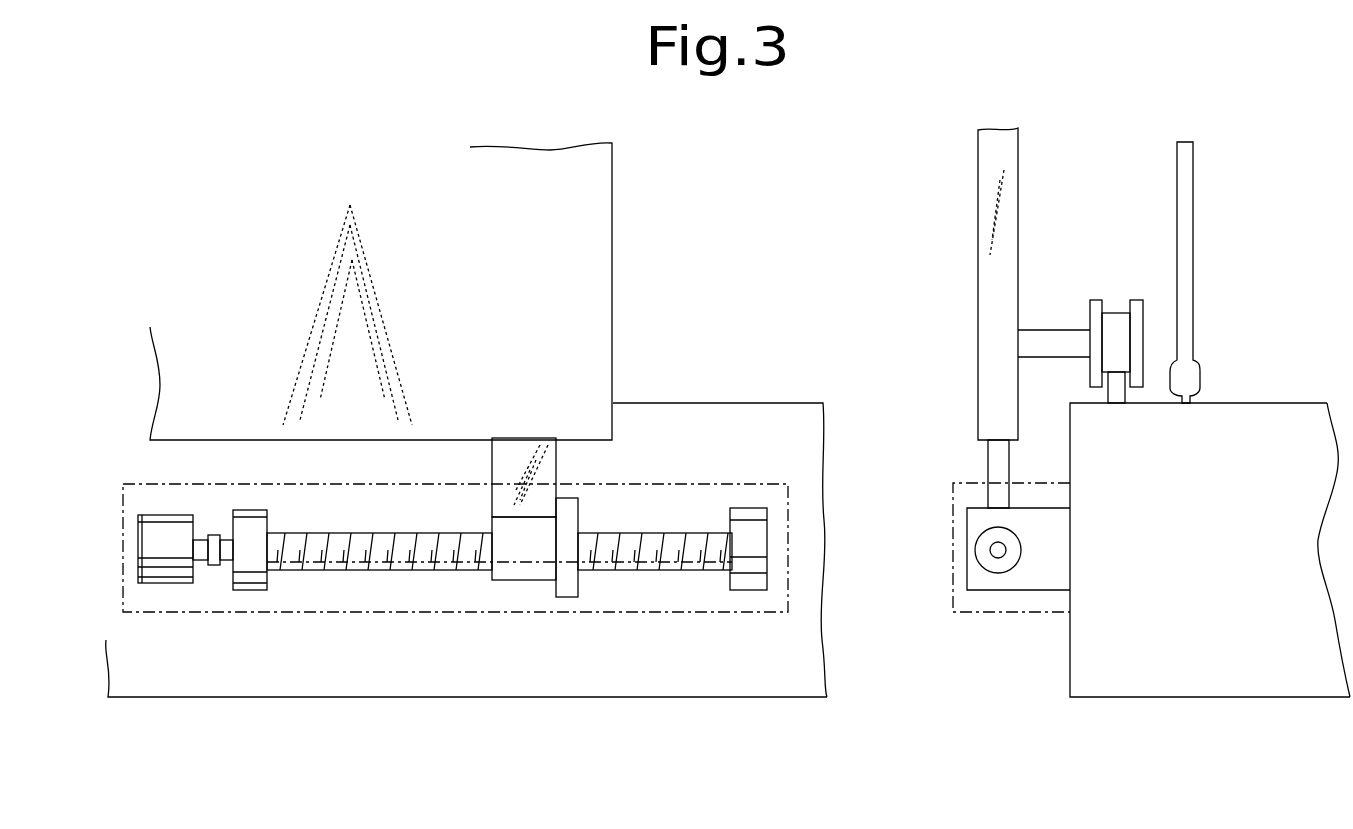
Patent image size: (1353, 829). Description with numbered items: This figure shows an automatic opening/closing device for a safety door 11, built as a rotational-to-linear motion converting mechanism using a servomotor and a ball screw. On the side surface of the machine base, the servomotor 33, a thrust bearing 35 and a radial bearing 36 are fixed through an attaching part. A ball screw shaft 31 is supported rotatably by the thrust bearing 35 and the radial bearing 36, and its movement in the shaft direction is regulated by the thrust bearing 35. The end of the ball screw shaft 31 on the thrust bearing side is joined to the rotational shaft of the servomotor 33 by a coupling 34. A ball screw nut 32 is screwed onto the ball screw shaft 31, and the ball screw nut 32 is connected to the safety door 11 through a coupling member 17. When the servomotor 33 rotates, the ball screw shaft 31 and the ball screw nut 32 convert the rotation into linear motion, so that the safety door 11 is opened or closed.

The safety door 11 is at (572, 205).
The coupling member 17 is at (527, 470).
The ball screw shaft 31 is at (645, 570).
The ball screw nut 32 is at (523, 560).
The servomotor 33 is at (168, 565).
The coupling 34 is at (213, 570).
The thrust bearing 35 is at (255, 595).
The radial bearing 36 is at (748, 578).